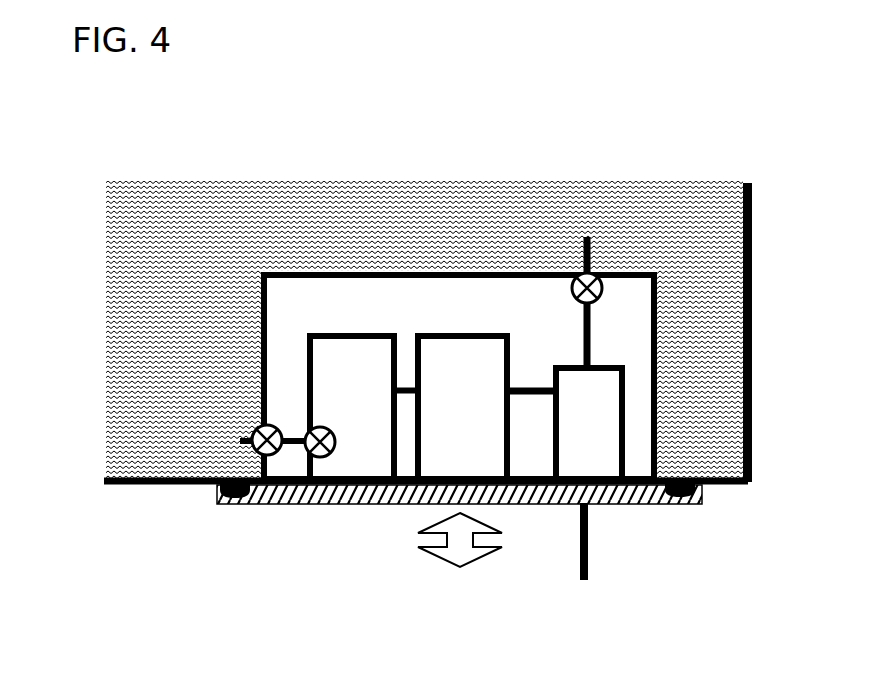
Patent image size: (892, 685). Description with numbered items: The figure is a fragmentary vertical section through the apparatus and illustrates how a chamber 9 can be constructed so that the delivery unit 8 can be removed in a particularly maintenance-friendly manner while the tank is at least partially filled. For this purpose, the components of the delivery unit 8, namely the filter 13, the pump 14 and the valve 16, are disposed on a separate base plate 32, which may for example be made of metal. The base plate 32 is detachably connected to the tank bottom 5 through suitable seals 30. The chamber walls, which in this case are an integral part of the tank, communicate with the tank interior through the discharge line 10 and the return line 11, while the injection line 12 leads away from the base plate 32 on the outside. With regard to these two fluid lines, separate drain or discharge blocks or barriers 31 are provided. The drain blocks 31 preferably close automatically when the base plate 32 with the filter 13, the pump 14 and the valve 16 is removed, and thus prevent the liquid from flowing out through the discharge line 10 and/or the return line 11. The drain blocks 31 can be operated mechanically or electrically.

The tank bottom 5 is at (133, 477).
The delivery unit 8 is at (220, 252).
The chamber 9 is at (367, 297).
The discharge line 10 is at (250, 442).
The return line 11 is at (590, 250).
The injection line 12 is at (590, 533).
The filter 13 is at (317, 272).
The pump 14 is at (467, 333).
The valve 16 is at (627, 383).
The seals 30 is at (242, 500).
The drain blocks 31 is at (322, 453).
The base plate 32 is at (523, 503).